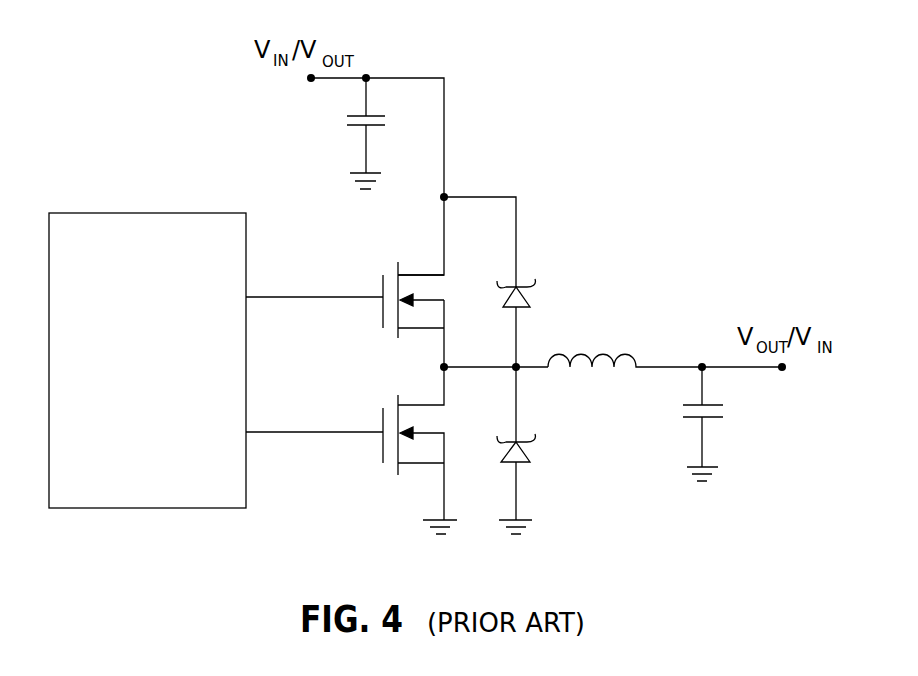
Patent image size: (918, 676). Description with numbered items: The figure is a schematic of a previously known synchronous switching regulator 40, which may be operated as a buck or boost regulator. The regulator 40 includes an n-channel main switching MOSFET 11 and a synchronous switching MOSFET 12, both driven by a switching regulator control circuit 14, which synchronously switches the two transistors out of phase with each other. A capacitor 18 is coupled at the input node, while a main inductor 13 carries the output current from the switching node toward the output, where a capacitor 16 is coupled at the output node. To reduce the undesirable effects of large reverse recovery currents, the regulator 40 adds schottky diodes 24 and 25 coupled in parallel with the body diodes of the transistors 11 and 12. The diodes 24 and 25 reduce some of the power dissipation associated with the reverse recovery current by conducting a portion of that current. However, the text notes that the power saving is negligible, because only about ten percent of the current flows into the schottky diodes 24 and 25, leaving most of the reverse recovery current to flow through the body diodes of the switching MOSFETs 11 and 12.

The synchronous switching regulator 40 is at (700, 180).
The switching regulator control circuit 14 is at (140, 213).
The capacitor at V_IN 18 is at (373, 112).
The main switching MOSFET 11 is at (442, 298).
The synchronous switching MOSFET 12 is at (440, 442).
The schottky diode 24 is at (522, 312).
The schottky diode 25 is at (517, 467).
The main inductor 13 is at (563, 352).
The capacitor at V_OUT 16 is at (690, 417).